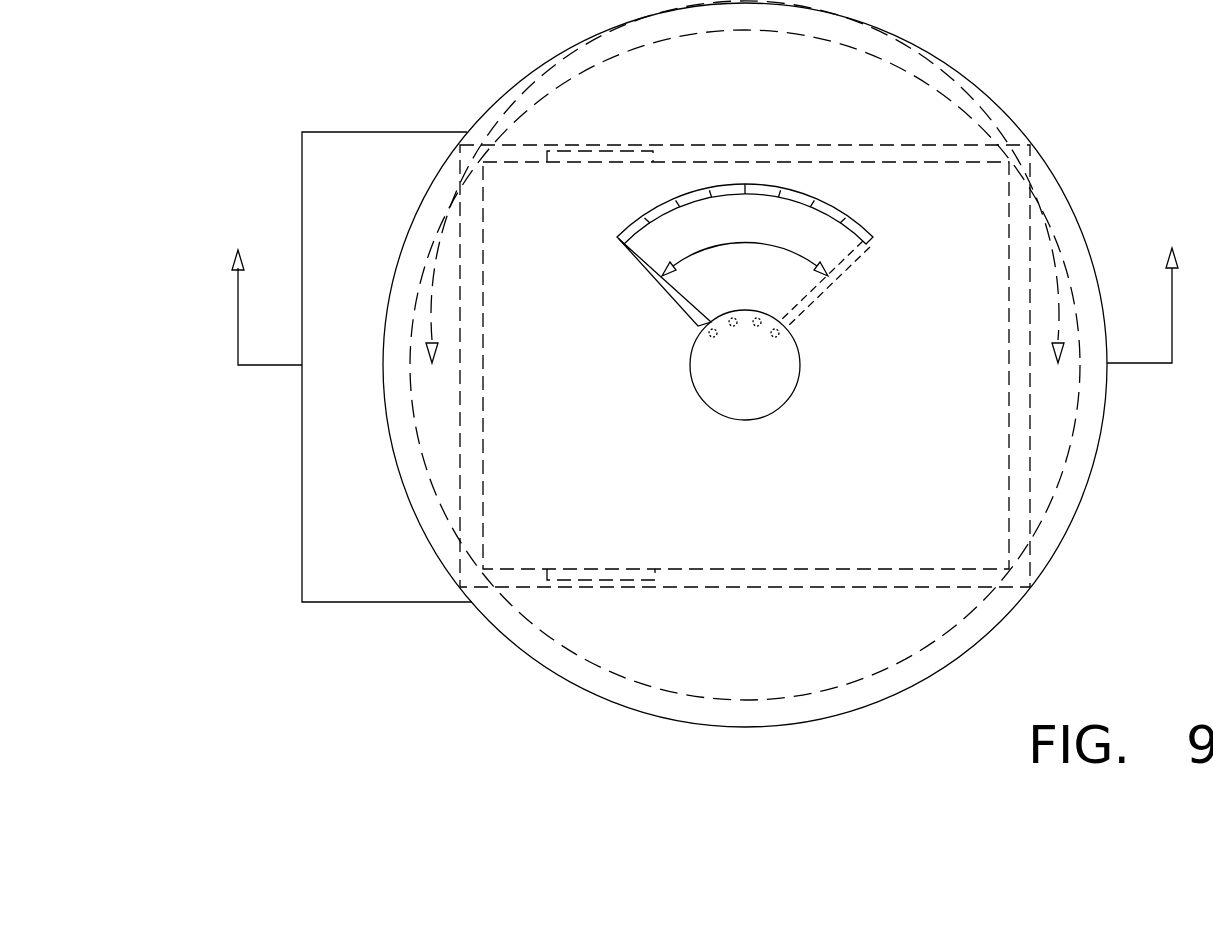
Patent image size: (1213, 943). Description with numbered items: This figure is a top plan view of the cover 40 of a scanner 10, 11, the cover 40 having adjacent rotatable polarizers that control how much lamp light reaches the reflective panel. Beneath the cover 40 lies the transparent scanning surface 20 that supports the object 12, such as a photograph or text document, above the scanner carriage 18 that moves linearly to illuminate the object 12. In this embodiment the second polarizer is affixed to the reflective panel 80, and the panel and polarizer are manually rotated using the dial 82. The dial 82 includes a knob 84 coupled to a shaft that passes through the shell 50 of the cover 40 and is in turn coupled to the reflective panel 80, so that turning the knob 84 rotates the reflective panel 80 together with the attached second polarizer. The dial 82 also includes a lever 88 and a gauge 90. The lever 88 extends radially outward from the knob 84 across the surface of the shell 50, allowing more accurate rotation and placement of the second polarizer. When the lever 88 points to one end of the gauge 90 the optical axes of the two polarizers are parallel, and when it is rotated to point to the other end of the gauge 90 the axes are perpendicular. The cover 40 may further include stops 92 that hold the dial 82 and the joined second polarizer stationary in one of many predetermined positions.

The scanner 10 is at (249, 331).
The inlet/outlet flow path 11 is at (1158, 328).
The object 12 is at (696, 563).
The scanner carriage 18 is at (599, 581).
The transparent scanning surface 20 is at (783, 580).
The cover 40 is at (290, 74).
The shell 50 is at (579, 47).
The reflective panel 80 is at (530, 107).
The dial 82 is at (749, 304).
The knob 84 is at (692, 368).
The lever 88 is at (672, 293).
The gauge 90 is at (833, 208).
The stops 92 is at (744, 342).